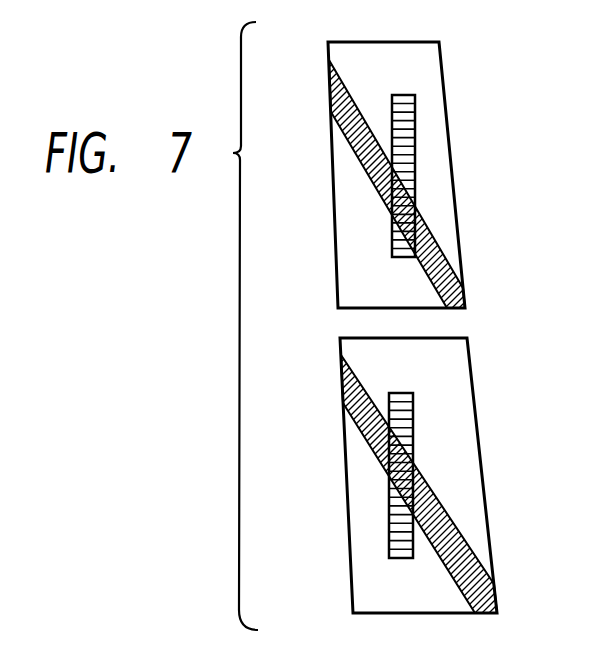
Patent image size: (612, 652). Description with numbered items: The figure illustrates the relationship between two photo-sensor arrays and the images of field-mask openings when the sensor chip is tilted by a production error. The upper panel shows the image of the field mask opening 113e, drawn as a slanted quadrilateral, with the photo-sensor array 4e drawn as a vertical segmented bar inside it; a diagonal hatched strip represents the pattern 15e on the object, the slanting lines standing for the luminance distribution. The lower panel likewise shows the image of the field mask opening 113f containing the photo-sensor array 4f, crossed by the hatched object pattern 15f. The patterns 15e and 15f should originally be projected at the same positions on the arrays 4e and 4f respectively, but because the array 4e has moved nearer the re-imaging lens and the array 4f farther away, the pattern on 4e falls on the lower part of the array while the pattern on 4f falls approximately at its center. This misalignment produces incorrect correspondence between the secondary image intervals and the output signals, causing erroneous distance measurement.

The field mask opening 113e is at (442, 82).
The photo-sensor array 4e is at (415, 134).
The pattern on the object 15e is at (368, 173).
The field mask opening 113f is at (473, 380).
The photo-sensor array 4f is at (413, 420).
The pattern on the object 15f is at (370, 441).